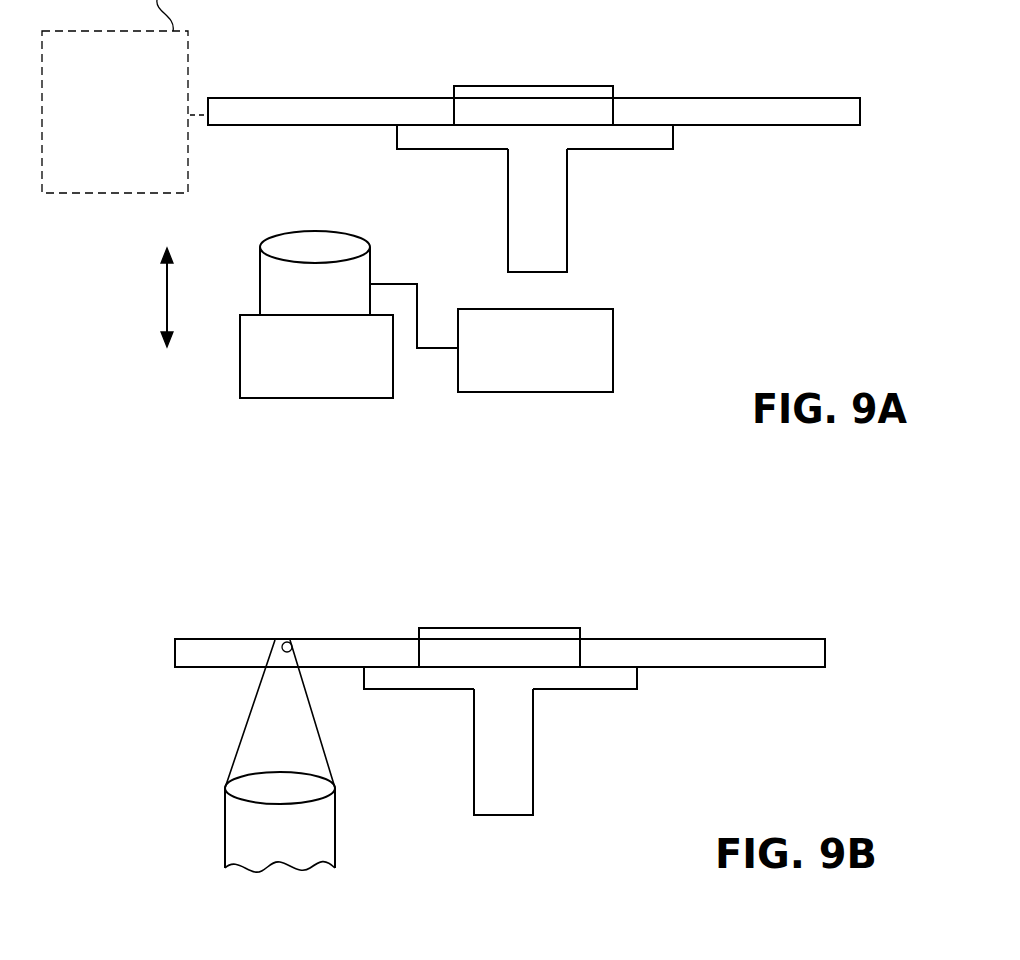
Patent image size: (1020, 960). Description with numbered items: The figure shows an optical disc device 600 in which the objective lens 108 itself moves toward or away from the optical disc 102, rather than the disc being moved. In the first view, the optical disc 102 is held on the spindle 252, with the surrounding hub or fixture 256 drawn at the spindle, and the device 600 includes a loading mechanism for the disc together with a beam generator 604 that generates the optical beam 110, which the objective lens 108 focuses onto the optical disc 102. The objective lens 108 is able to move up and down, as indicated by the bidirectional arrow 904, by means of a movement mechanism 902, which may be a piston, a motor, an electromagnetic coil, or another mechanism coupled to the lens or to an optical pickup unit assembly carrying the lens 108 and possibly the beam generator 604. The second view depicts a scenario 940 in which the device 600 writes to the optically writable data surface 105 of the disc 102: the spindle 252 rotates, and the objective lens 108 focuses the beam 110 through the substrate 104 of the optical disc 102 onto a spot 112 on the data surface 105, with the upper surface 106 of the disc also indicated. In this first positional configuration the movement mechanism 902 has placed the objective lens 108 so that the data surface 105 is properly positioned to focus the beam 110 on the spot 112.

In FIG. 9A, the optical disc 102 is at (860, 103).
In FIG. 9B, the optical disc 102 is at (825, 645).
In FIG. 9B, the substrate 104 is at (715, 657).
In FIG. 9B, the optically writable data surface 105 is at (787, 640).
In FIG. 9B, the top surface of panel 106 is at (722, 635).
In FIG. 9A, the objective lens 108 is at (290, 240).
In FIG. 9B, the objective lens 108 is at (255, 782).
In FIG. 9A, the optical beam 110 is at (299, 304).
In FIG. 9B, the optical beam 110 is at (264, 847).
In FIG. 9B, the spot 112 is at (292, 647).
In FIG. 9A, the spindle 252 is at (520, 252).
In FIG. 9B, the spindle 252 is at (500, 815).
In FIG. 9A, the fixture 256 is at (618, 138).
In FIG. 9B, the fixture 256 is at (585, 677).
In FIG. 9A, the optical disc device 600 is at (740, 206).
In FIG. 9A, the beam generator 604 is at (357, 392).
In FIG. 9A, the movement mechanism 902 is at (613, 340).
In FIG. 9A, the bidirectional arrow 904 is at (160, 297).
In FIG. 9B, the scenario 940 is at (115, 850).